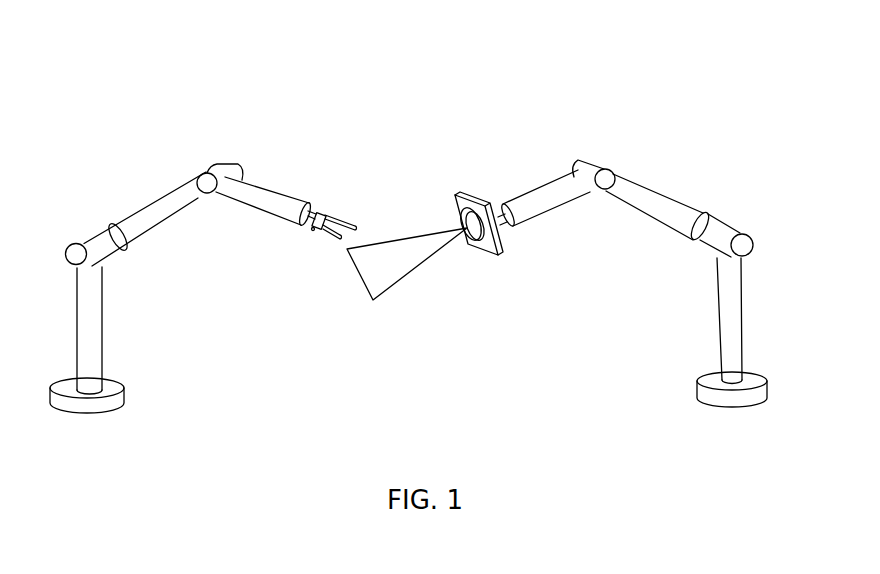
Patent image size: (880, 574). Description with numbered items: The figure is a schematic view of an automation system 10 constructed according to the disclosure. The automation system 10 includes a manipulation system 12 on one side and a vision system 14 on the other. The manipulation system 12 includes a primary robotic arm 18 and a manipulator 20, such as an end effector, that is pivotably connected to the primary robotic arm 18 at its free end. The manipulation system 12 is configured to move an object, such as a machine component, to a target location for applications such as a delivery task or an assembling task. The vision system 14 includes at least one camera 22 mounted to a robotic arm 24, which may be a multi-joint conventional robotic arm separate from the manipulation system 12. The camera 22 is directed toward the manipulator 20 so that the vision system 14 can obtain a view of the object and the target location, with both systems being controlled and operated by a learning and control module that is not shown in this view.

The automation system 10 is at (623, 63).
The manipulation system 12 is at (230, 109).
The vision system 14 is at (479, 159).
The primary robotic arm 18 is at (130, 182).
The manipulator 20 is at (328, 230).
The camera 22 is at (487, 249).
The robotic arm 24 is at (698, 146).